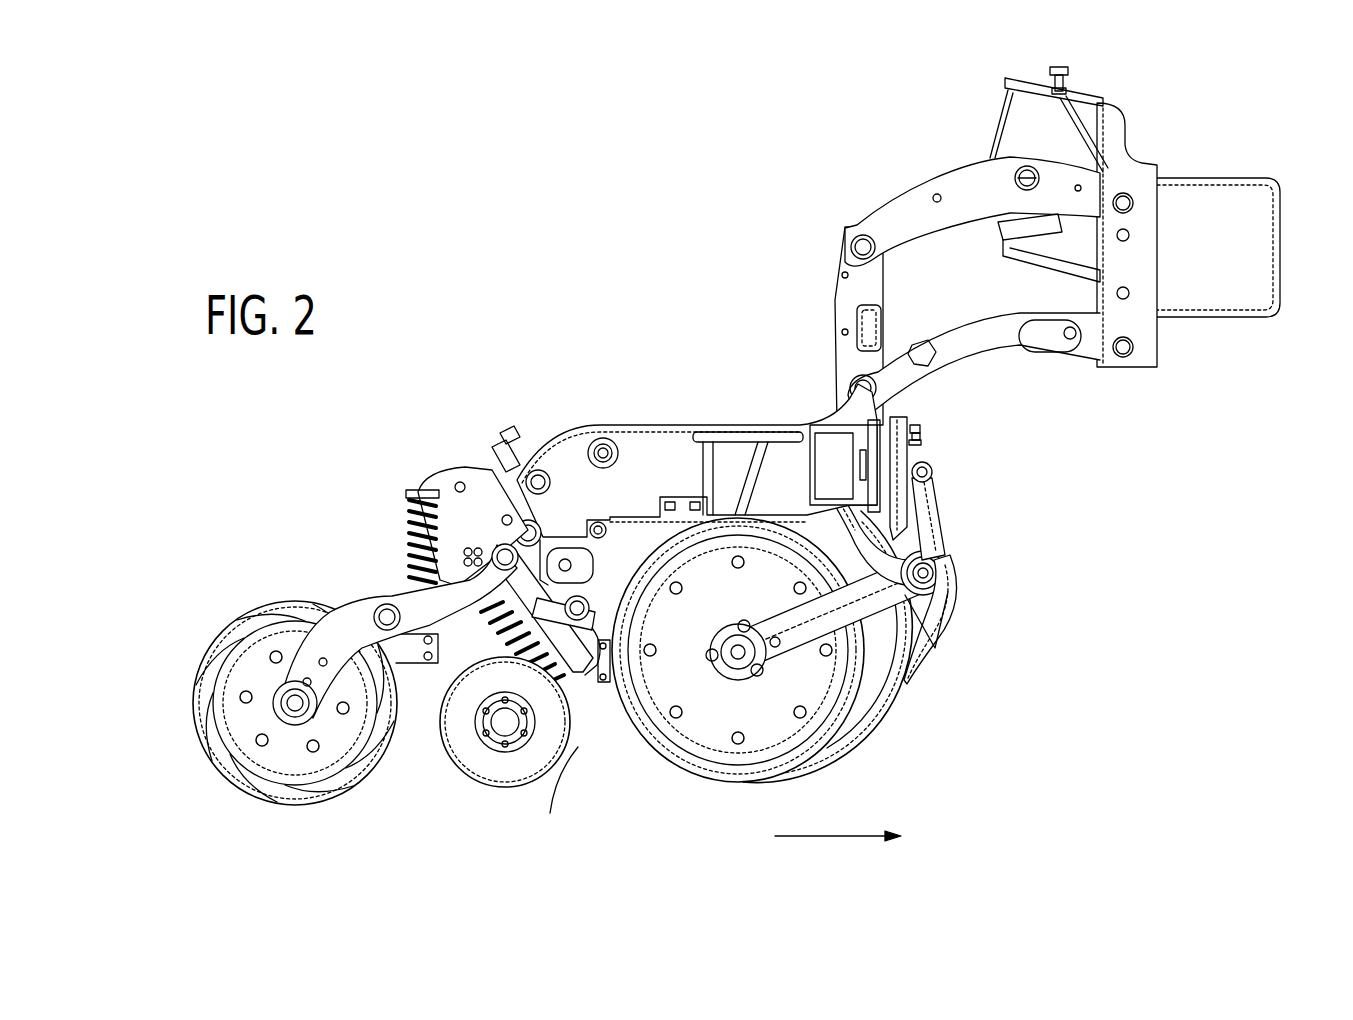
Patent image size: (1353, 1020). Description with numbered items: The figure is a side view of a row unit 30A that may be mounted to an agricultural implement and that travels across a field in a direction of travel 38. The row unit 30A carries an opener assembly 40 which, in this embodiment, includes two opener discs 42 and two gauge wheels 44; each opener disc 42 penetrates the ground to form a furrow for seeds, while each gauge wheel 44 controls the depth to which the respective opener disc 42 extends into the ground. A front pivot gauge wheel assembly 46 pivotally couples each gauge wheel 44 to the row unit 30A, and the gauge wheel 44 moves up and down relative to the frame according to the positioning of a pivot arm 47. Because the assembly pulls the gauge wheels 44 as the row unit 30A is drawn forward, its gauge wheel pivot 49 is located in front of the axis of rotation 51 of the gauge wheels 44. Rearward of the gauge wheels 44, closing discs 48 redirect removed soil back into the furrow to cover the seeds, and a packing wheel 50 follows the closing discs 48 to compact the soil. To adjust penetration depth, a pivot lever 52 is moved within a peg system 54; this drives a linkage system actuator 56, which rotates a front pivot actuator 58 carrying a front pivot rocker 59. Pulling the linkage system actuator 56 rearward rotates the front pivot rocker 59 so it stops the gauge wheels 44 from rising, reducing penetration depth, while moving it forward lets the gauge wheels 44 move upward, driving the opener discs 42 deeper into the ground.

The row unit 30A is at (668, 291).
The direction of travel 38 is at (830, 834).
The opener assembly 40 is at (805, 667).
The opener disc 42 is at (887, 702).
The gauge wheel 44 is at (660, 728).
The front pivot gauge wheel assembly 46 is at (946, 632).
The pivot arm 47 is at (870, 603).
The closing disc 48 is at (522, 773).
The gauge wheel pivot 49 is at (947, 559).
The packing wheel 50 is at (232, 772).
The axis of rotation 51 is at (735, 662).
The pivot lever 52 is at (498, 447).
The peg system 54 is at (557, 443).
The linkage system actuator 56 is at (925, 432).
The front pivot actuator 58 is at (905, 462).
The front pivot rocker 59 is at (867, 547).